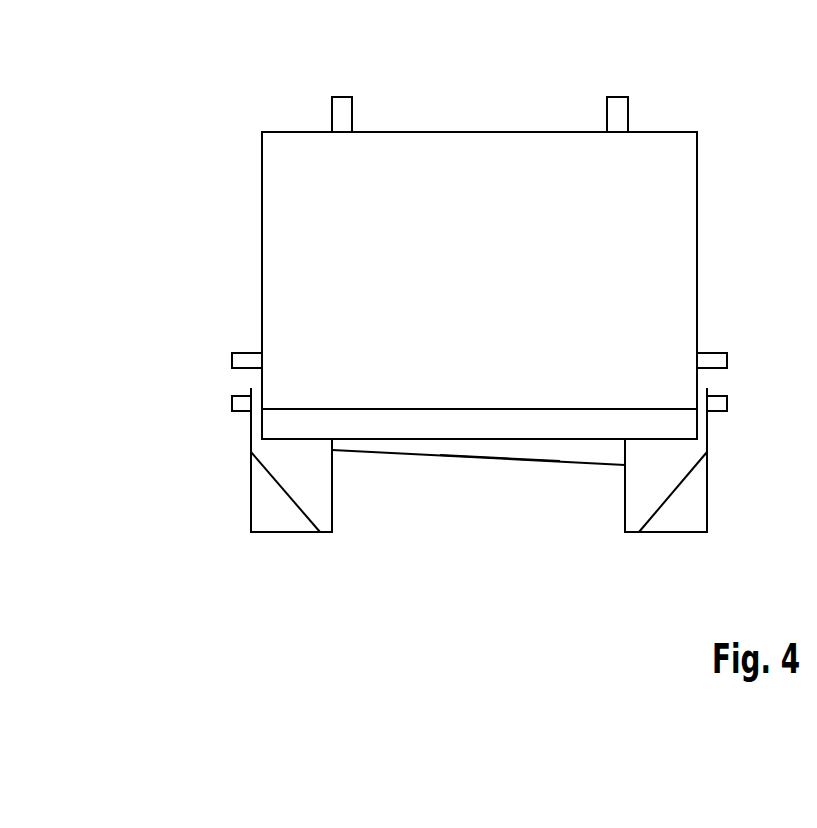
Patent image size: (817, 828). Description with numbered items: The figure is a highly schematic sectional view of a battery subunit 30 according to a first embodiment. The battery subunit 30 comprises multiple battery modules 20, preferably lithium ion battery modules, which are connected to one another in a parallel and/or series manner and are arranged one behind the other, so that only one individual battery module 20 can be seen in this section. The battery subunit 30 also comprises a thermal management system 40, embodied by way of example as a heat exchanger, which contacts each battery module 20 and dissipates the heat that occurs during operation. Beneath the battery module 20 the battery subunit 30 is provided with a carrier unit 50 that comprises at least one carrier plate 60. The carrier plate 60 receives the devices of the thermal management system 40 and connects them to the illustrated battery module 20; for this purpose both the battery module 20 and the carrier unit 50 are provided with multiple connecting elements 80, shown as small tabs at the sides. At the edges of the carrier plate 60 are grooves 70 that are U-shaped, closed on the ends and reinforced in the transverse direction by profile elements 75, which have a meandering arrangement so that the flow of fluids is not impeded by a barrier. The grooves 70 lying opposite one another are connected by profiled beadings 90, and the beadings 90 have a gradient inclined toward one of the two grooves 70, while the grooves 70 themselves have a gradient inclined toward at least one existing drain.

The battery module 20 is at (677, 198).
The battery subunit 30 is at (197, 162).
The thermal management system 40 is at (421, 441).
The carrier unit 50 is at (492, 552).
The carrier plate 60 is at (553, 478).
The groove 70 is at (247, 538).
The profile element 75 is at (278, 518).
The connecting element 80 is at (232, 360).
The profiled beading 90 is at (503, 447).